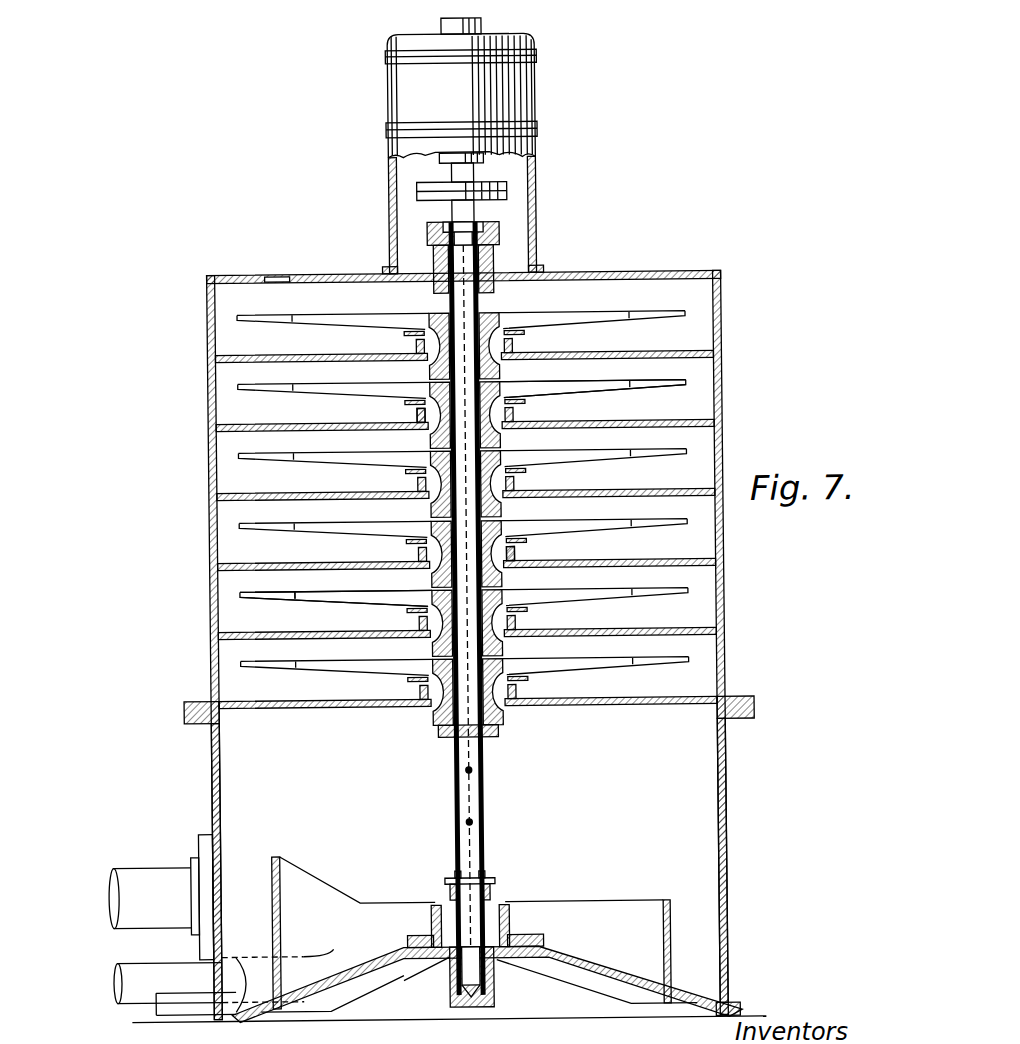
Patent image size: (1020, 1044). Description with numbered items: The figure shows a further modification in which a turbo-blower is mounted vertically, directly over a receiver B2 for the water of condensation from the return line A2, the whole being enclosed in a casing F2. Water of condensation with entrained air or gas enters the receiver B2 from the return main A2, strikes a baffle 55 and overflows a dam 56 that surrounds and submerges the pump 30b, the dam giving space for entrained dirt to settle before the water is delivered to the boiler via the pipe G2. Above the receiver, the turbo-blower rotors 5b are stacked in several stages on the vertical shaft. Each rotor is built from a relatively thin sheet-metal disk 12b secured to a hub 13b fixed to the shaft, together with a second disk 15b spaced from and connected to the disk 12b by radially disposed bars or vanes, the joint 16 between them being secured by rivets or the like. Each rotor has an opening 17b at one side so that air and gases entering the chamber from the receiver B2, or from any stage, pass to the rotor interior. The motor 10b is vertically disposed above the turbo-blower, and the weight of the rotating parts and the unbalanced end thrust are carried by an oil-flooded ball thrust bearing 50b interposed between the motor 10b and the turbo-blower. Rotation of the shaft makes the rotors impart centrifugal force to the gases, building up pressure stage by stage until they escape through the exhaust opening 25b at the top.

The motor 10b is at (462, 145).
The ball thrust bearing 50b is at (503, 241).
The exhaust opening 25b is at (281, 275).
The conical trays 5b is at (467, 505).
The disks 12b is at (463, 479).
The hubs 13b is at (492, 370).
The disks 15b is at (608, 392).
The opening 17b is at (426, 360).
The tray joint 16 is at (296, 599).
The casing F2 is at (212, 428).
The receiver B2 is at (722, 785).
The baffle 55 is at (274, 855).
The dam 56 is at (664, 903).
The pump 30b is at (505, 912).
The return line A2 is at (160, 898).
The pipe G2 is at (224, 982).
The element shaft is at (467, 608).